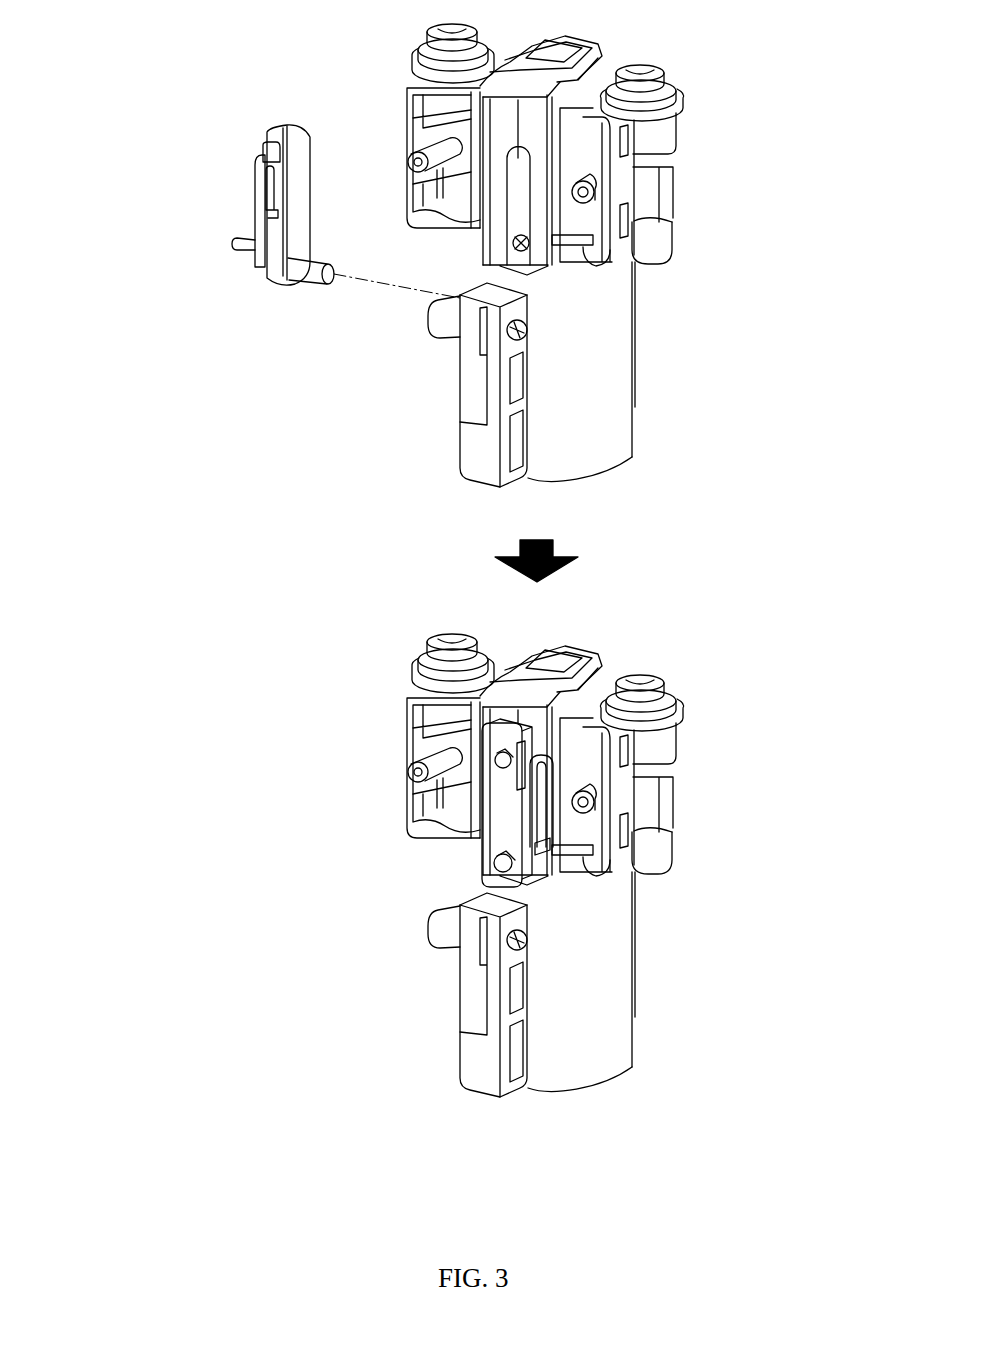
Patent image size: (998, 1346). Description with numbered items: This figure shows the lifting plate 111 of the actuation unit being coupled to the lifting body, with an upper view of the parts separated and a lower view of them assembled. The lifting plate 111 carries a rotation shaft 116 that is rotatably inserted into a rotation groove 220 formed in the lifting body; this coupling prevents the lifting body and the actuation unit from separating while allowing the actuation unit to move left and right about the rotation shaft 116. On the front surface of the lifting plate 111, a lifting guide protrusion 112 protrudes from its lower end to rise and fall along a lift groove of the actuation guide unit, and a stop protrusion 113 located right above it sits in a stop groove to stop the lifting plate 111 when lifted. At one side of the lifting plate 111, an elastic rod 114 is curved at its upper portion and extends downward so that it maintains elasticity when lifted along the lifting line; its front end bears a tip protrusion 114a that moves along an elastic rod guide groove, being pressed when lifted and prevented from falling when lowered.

The lifting plate 111 is at (302, 152).
The lifting guide protrusion 112 is at (258, 268).
The stop protrusion 113 is at (262, 149).
The elastic rod 114 is at (249, 202).
The tip protrusion 114a is at (230, 243).
The rotation shaft 116 is at (317, 277).
The rotation groove 220 is at (492, 274).